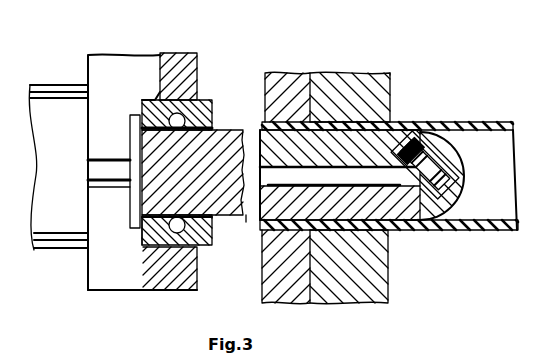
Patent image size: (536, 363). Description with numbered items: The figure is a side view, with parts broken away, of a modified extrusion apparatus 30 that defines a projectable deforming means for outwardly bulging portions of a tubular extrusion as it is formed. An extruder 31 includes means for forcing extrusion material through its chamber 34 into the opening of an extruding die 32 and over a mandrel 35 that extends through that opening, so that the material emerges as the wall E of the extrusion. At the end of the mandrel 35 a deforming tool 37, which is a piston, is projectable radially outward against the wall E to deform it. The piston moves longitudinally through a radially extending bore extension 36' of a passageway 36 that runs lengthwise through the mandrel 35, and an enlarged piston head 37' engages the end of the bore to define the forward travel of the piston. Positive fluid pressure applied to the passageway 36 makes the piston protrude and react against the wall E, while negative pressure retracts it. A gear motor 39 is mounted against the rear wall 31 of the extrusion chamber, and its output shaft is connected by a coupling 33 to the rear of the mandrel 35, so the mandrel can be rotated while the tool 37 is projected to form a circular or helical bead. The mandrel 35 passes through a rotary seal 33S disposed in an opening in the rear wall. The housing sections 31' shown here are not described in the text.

The extrusion apparatus 30 is at (418, 60).
The extruder 31 is at (226, 189).
The housing ring 31' is at (169, 61).
The extruding die 32 is at (370, 270).
The coupling 33 is at (118, 190).
The rotary seal 33S is at (150, 218).
The chamber 34 is at (247, 230).
The mandrel 35 is at (416, 230).
The passageway 36 is at (303, 172).
The bore extension 36' is at (417, 111).
The deforming tool 37 is at (448, 164).
The enlarged piston head 37' is at (447, 165).
The gear motor 39 is at (55, 250).
The wall of the extrusion E is at (490, 122).